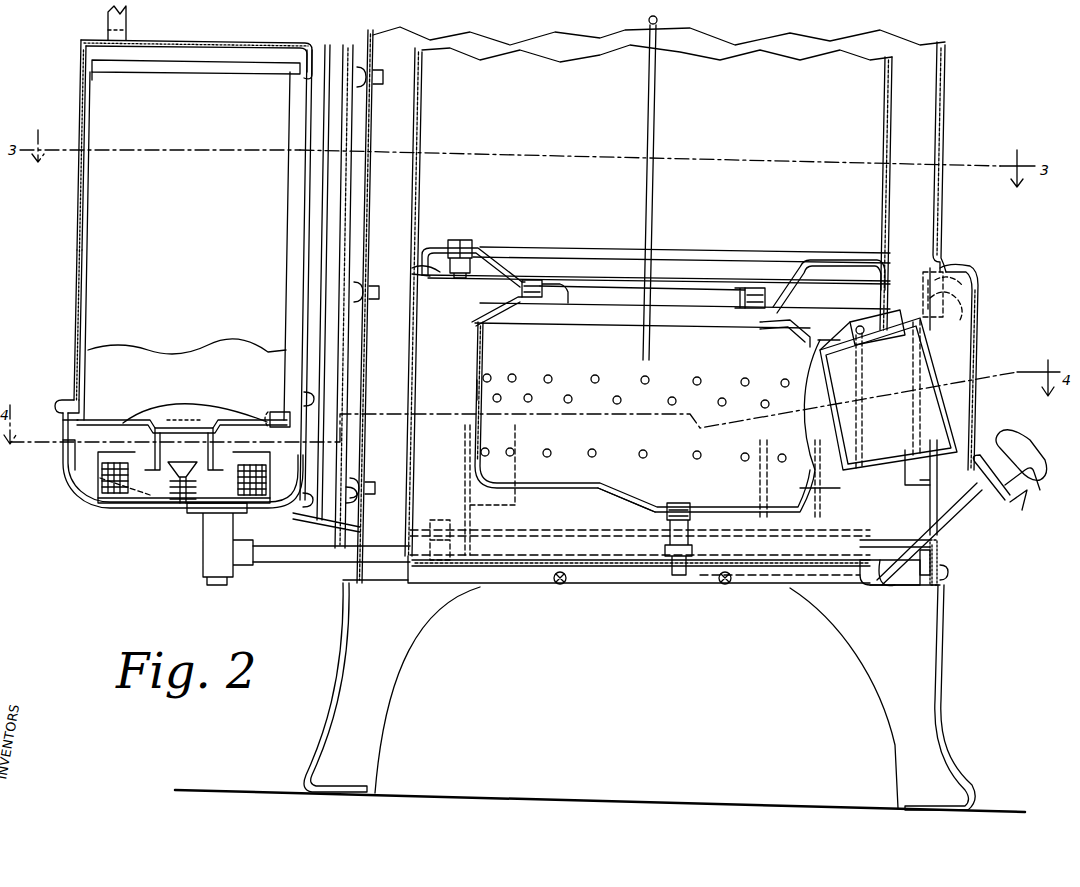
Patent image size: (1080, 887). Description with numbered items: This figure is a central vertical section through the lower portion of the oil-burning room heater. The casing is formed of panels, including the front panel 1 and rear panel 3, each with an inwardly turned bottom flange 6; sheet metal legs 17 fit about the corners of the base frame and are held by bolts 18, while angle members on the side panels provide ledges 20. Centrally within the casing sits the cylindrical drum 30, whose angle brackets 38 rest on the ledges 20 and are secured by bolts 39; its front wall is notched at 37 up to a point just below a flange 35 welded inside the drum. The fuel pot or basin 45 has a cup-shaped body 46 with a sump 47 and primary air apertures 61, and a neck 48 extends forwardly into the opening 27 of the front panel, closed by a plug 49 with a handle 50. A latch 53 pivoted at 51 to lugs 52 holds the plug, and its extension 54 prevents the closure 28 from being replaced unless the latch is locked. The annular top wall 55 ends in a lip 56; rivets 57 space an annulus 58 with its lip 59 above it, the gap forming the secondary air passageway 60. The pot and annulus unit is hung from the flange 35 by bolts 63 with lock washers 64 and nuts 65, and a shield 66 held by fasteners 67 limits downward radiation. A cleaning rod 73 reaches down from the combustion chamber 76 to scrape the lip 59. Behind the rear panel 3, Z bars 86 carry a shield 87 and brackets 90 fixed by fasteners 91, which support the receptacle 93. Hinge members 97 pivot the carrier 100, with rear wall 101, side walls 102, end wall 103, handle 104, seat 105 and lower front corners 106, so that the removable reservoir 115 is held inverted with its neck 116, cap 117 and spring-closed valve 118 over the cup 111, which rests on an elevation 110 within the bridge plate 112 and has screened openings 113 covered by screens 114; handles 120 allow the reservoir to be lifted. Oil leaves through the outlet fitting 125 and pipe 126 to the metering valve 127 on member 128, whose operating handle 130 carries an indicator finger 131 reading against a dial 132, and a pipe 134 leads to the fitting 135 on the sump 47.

The front panel 1 is at (943, 132).
The rear panel 3 is at (368, 216).
The bottom flange 6 is at (362, 582).
The legs 17 is at (352, 708).
The fastening means or bolts 18 is at (949, 574).
The ledges 20 is at (552, 530).
The opening 27 is at (918, 480).
The closure 28 is at (977, 334).
The cylindrical drum 30 is at (421, 118).
The flange 35 is at (482, 250).
The notch 37 is at (918, 478).
The angle brackets 38 is at (465, 490).
The fastening means or bolts 39 is at (636, 697).
The fuel pot or basin 45 is at (470, 359).
The body 46 is at (476, 393).
The sump 47 is at (630, 500).
The neck 48 is at (842, 475).
The plug 49 is at (808, 370).
The handle 50 is at (920, 362).
The pivot 51 is at (858, 322).
The lugs 52 is at (874, 340).
The latch 53 is at (905, 290).
The extension 54 is at (978, 298).
The annular top wall 55 is at (498, 312).
The lip 56 is at (540, 312).
The rivets 57 is at (535, 280).
The annulus 58 is at (792, 290).
The lip 59 is at (740, 330).
The passageway 60 is at (742, 288).
The apertures 61 is at (695, 440).
The fastening means 63 is at (465, 292).
The lock washers 64 is at (411, 270).
The nuts 65 is at (452, 276).
The shield 66 is at (645, 590).
The fastening means 67 is at (563, 585).
The cleaning rod 73 is at (647, 136).
The combustion chamber 76 is at (681, 177).
The Z bars 86 is at (343, 118).
The shield 87 is at (366, 187).
The brackets 90 is at (63, 420).
The fastening means 91 is at (315, 394).
The receptacle 93 is at (92, 488).
The hinge members 97 is at (60, 402).
The carrier 100 is at (77, 244).
The rear wall 101 is at (76, 333).
The side walls 102 is at (287, 244).
The end wall 103 is at (290, 44).
The handle 104 is at (108, 22).
The seat 105 is at (108, 420).
The lower front corners 106 is at (295, 418).
The elevation 110 is at (170, 505).
The cup 111 is at (130, 503).
The bridge plate 112 is at (66, 445).
The openings 113 is at (100, 478).
The screens 114 is at (108, 505).
The fuel tank or reservoir 115 is at (147, 129).
The neck 116 is at (162, 440).
The cap 117 is at (212, 470).
The valve 118 is at (183, 503).
The handles 120 is at (205, 418).
The outlet fitting 125 is at (203, 560).
The pipe 126 is at (333, 562).
The valve 127 is at (940, 556).
The member 128 is at (940, 528).
The operating handle 130 is at (1025, 445).
The indicator finger 131 is at (1018, 497).
The dial 132 is at (990, 455).
The pipe 134 is at (777, 585).
The fitting 135 is at (680, 578).